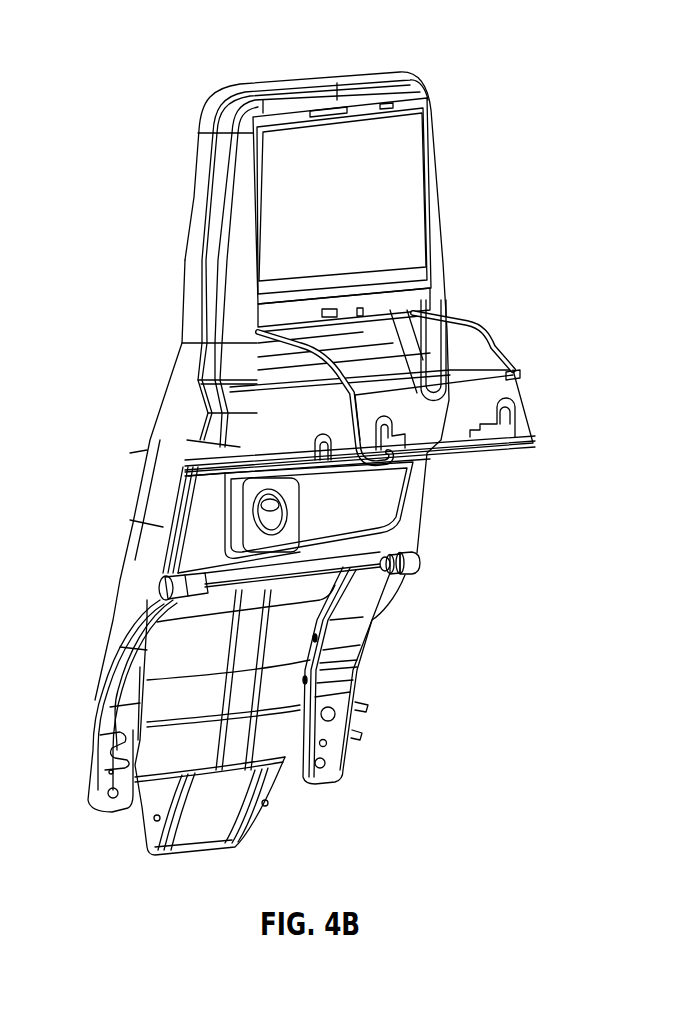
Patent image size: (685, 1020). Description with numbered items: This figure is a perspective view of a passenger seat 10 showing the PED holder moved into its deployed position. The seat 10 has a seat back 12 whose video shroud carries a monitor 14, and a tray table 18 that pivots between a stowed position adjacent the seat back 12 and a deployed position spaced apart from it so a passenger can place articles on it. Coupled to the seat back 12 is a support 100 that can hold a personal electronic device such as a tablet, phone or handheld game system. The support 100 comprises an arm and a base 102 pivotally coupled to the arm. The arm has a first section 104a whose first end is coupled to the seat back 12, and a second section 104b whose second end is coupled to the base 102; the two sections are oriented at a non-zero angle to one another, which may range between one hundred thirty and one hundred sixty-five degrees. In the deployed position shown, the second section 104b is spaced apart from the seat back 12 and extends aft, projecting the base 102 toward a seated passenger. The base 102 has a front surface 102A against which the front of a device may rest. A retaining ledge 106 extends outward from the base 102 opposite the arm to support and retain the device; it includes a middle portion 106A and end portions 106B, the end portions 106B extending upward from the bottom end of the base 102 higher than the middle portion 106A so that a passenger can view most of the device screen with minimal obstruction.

The seat 10 is at (146, 96).
The seat back 12 is at (197, 197).
The monitor 14 is at (383, 192).
The tray table 18 is at (250, 510).
The support 100 is at (546, 273).
The base 102 is at (580, 416).
The front surface 102A is at (510, 393).
The first section 104a is at (450, 317).
The second section 104b is at (497, 340).
The retaining ledge 106 is at (544, 512).
The middle portion 106A is at (460, 457).
The end portions 106B is at (500, 433).